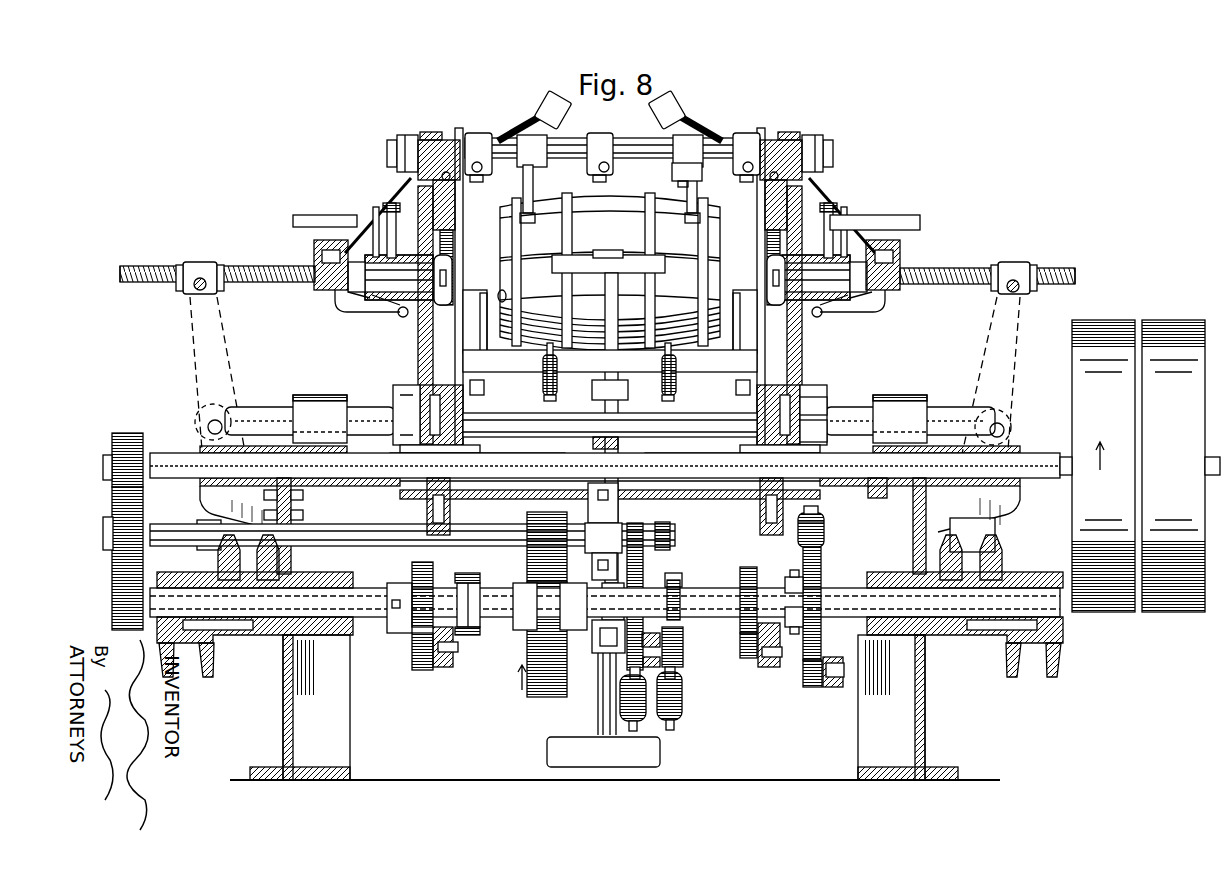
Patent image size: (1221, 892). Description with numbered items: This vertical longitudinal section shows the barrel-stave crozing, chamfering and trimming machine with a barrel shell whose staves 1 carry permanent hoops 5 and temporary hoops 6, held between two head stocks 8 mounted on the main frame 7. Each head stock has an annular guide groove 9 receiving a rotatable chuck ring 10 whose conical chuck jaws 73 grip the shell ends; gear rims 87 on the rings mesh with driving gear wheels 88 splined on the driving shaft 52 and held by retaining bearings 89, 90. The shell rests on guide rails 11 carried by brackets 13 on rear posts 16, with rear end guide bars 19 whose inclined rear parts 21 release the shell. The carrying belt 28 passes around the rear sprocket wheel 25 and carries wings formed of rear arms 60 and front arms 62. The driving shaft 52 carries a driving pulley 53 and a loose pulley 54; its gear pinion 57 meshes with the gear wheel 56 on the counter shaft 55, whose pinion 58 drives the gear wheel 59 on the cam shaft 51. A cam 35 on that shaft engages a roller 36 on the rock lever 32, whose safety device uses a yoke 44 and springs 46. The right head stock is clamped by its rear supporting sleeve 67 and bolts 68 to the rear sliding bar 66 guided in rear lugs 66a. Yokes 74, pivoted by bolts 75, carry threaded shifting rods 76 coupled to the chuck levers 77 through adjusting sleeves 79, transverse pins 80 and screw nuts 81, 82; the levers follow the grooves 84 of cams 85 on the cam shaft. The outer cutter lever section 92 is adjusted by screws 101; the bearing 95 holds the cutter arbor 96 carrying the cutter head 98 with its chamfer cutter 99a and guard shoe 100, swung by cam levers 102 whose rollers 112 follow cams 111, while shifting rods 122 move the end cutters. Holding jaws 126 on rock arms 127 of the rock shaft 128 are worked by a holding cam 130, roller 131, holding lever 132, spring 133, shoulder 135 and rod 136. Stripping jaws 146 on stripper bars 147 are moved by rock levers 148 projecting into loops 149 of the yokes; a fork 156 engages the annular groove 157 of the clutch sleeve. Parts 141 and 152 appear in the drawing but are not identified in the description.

The staves 1 is at (692, 284).
The permanent hoops 5 is at (640, 236).
The temporary hoops 6 is at (522, 275).
The main frame 7 is at (915, 725).
The head stocks 8 is at (772, 134).
The internal annular guide groove 9 is at (748, 188).
The chuck ring 10 is at (780, 178).
The guide rails 11 is at (672, 396).
The brackets 13 is at (610, 361).
The rear posts 16 is at (792, 375).
The rear end guide bars 19 is at (740, 292).
The rear part of end guide bar 21 is at (736, 390).
The rear sprocket wheel 25 is at (620, 442).
The carrying belt 28 is at (592, 392).
The rock lever 32 is at (683, 642).
The cam 35 is at (645, 562).
The roller 36 is at (598, 658).
The yoke 44 is at (675, 671).
The springs 46 is at (682, 694).
The cam shaft 51 is at (395, 617).
The driving shaft 52 is at (880, 492).
The driving pulley 53 is at (1181, 466).
The loose pulley 54 is at (1097, 466).
The counter shaft 55 is at (335, 546).
The gear wheel 56 is at (112, 590).
The gear pinion 57 is at (120, 433).
The pinion 58 is at (527, 518).
The gear wheel 59 is at (545, 697).
The rear arm 60 is at (572, 740).
The front arm 62 is at (620, 282).
The rear sliding bar 66 is at (945, 403).
The rear lugs 66a is at (900, 400).
The rear supporting sleeve 67 is at (827, 406).
The bolts 68 is at (827, 436).
The chuck jaws 73 is at (765, 204).
The yokes 74 is at (892, 290).
The pivot bolts 75 is at (822, 314).
The shifting rod 76 is at (955, 268).
The chuck levers 77 is at (985, 340).
The adjusting sleeve 79 is at (1014, 262).
The transverse pin 80 is at (1020, 288).
The screw nut 81 is at (1036, 265).
The screw nut 82 is at (994, 266).
The cam groove 84 is at (1045, 668).
The cam 85 is at (1046, 652).
The gear rims 87 is at (810, 135).
The driving gear wheels 88 is at (760, 515).
The retaining bearing 89 is at (827, 395).
The retaining bearing 90 is at (735, 446).
The outer cutter lever section 92 is at (765, 238).
The bearing 95 is at (860, 306).
The cutter arbor 96 is at (866, 305).
The cutter head 98 is at (452, 262).
The chamfer cutter 99a is at (818, 318).
The shoe 100 is at (508, 298).
The adjusting screws 101 is at (900, 218).
The cam levers 102 is at (772, 668).
The cam 111 is at (757, 580).
The roller 112 is at (748, 660).
The shifting rod 122 is at (868, 205).
The holding jaws 126 is at (688, 200).
The rock arms 127 is at (718, 182).
The rock shaft 128 is at (640, 141).
The holding cam 130 is at (822, 580).
The roller 131 is at (810, 690).
The holding lever 132 is at (832, 688).
The spring 133 is at (800, 540).
The shoulder 135 is at (822, 512).
The rod 136 is at (826, 528).
The spring 141 is at (662, 385).
The stripping jaws 146 is at (675, 104).
The stripper bars 147 is at (717, 126).
The rock levers 148 is at (840, 202).
The loops 149 is at (894, 254).
The nut 152 is at (478, 635).
The fork 156 is at (466, 573).
The annular groove 157 is at (480, 590).